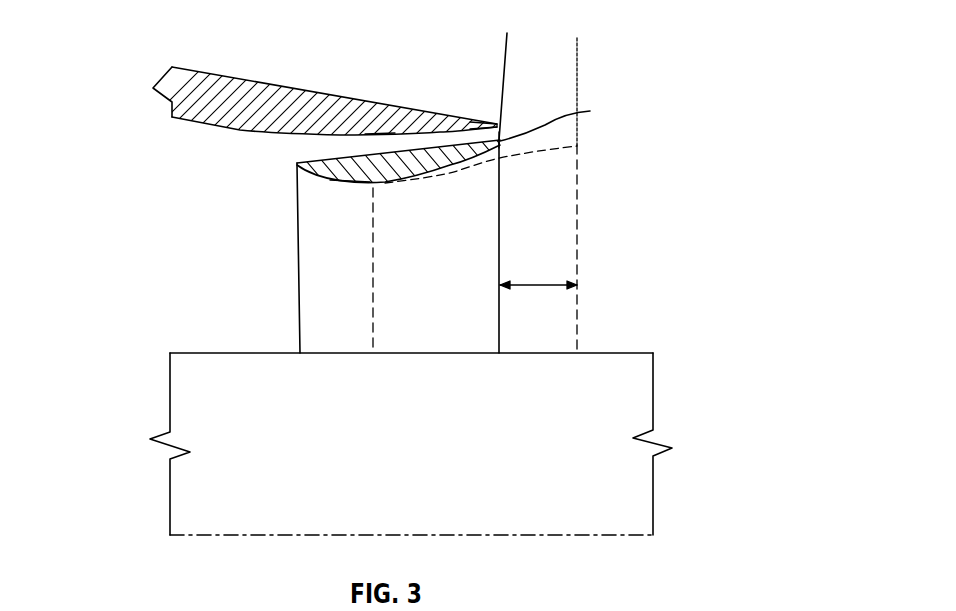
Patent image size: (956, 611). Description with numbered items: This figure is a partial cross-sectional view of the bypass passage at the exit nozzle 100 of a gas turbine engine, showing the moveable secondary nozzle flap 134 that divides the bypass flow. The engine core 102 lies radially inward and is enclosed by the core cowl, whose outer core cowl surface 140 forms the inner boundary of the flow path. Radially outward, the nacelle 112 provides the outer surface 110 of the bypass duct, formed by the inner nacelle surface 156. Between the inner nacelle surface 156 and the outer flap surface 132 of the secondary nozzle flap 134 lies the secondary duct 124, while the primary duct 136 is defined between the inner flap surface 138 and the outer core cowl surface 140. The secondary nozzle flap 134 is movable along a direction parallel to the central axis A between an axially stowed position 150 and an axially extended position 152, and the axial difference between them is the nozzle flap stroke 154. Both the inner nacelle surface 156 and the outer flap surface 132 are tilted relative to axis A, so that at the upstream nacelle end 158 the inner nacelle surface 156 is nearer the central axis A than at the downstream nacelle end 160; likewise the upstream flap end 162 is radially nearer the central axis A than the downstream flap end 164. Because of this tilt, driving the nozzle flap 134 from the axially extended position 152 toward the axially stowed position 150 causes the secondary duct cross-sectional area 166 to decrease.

The exit nozzle 100 is at (278, 254).
The engine core 102 is at (446, 452).
The outer surface of the bypass duct 110 is at (213, 118).
The nacelle 112 is at (265, 105).
The secondary duct 124 is at (477, 123).
The outer flap surface 132 is at (430, 144).
The secondary nozzle flap 134 is at (350, 182).
The primary duct 136 is at (464, 280).
The inner flap surface 138 is at (423, 174).
The outer core cowl surface 140 is at (195, 352).
The axially stowed position 150 is at (298, 307).
The axially extended position 152 is at (377, 297).
The nozzle flap stroke 154 is at (550, 287).
The inner nacelle surface 156 is at (380, 133).
The upstream nacelle end 158 is at (332, 132).
The downstream nacelle end 160 is at (489, 118).
The upstream flap end 162 is at (296, 164).
The downstream flap end 164 is at (577, 112).
The secondary duct cross-sectional area 166 is at (499, 137).
The central axis A is at (230, 537).